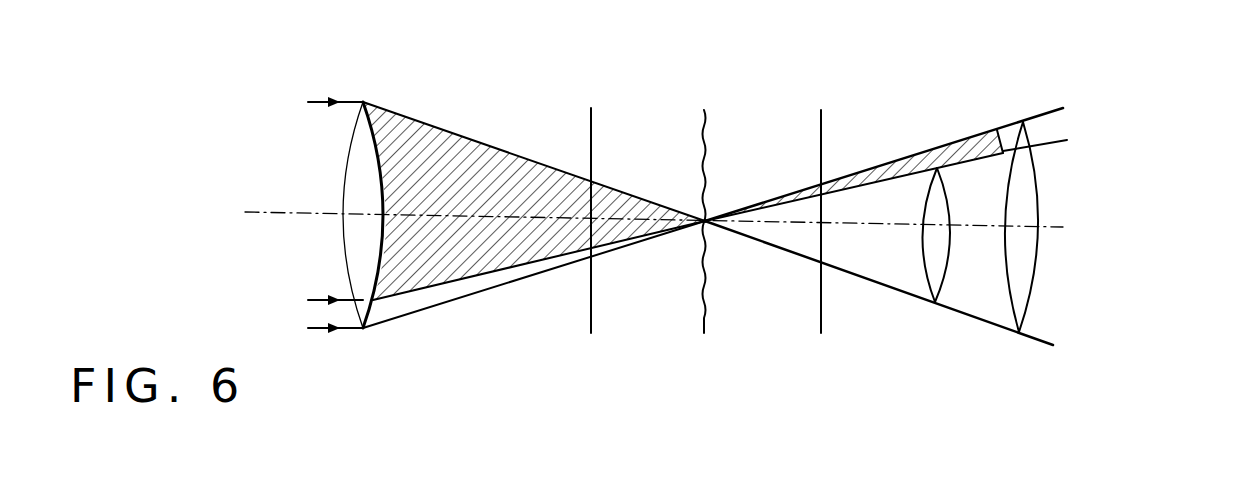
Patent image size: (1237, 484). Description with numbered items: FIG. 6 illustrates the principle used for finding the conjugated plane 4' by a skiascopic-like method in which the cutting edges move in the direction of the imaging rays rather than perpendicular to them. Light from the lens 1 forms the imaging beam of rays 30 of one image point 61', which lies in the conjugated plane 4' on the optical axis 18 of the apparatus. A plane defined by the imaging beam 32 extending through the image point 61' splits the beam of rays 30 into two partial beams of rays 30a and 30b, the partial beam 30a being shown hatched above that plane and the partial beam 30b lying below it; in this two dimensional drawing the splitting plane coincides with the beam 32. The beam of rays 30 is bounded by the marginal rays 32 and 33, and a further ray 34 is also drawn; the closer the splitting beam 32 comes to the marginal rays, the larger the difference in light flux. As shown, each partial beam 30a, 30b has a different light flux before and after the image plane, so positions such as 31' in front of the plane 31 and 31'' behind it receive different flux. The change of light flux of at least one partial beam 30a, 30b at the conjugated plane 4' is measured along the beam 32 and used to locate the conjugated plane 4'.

The objective lens 1 is at (384, 112).
The conjugated plane 4' is at (675, 78).
The optical axis 18 is at (1065, 227).
The beam of rays 30 is at (965, 251).
The partial beam of rays 30a is at (997, 130).
The partial beam of rays 30b is at (935, 302).
The focal plane / field stop 31 is at (722, 188).
The position of the target object in front of the conjugated plane 31' is at (605, 188).
The position of the target object behind the conjugated plane 31'' is at (847, 189).
The imaging beam 32 is at (306, 298).
The marginal ray 33 is at (305, 330).
The light ray 34 is at (318, 100).
The image point 61' is at (739, 194).